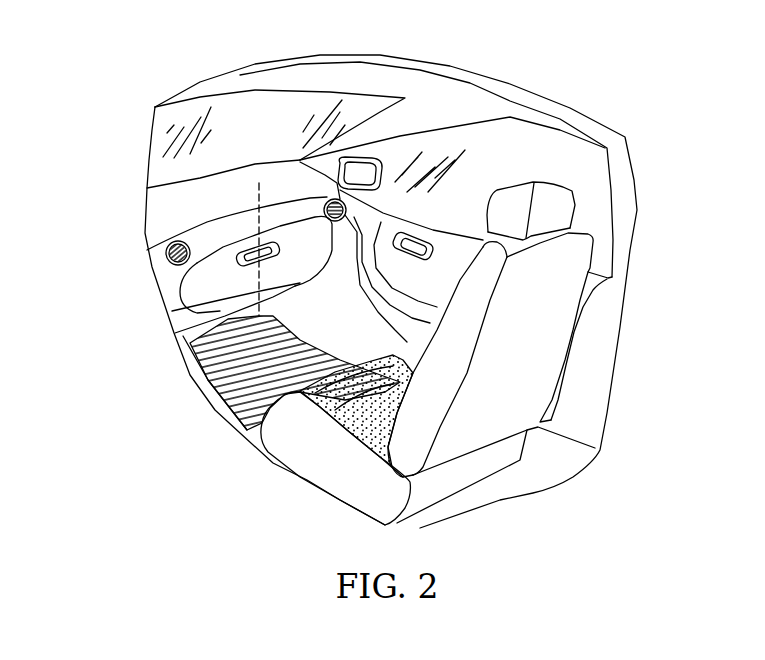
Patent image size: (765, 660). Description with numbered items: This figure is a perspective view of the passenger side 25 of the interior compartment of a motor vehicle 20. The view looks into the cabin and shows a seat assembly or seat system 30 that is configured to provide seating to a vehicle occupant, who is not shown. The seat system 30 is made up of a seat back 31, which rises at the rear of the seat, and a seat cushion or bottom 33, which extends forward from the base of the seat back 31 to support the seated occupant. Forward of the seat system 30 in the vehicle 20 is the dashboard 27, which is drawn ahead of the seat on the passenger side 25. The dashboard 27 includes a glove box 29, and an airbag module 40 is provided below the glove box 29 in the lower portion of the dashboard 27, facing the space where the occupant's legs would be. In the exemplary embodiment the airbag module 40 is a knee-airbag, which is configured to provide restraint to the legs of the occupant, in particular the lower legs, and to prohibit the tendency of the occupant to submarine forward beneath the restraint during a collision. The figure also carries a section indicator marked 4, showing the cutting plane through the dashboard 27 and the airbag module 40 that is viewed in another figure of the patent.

The vehicle 20 is at (165, 45).
The passenger side 25 is at (582, 86).
The dashboard 27 is at (207, 215).
The glove box 29 is at (187, 287).
The section line 4- 4 is at (259, 183).
The airbag module 40 is at (226, 318).
The seat cushion 33 is at (317, 467).
The seat back 31 is at (537, 322).
The seat assembly 30 is at (545, 475).